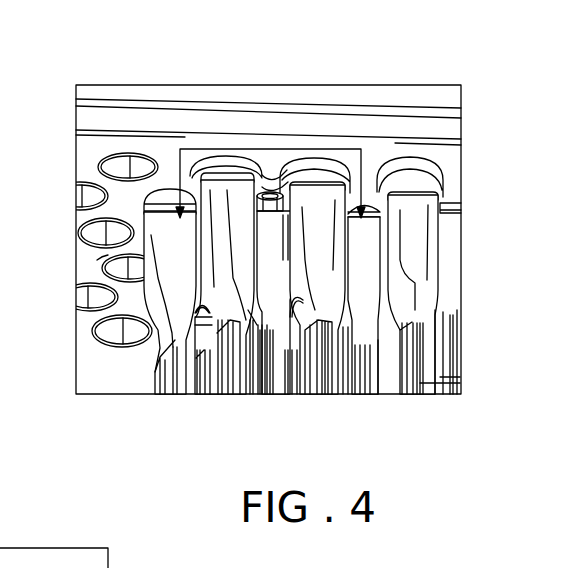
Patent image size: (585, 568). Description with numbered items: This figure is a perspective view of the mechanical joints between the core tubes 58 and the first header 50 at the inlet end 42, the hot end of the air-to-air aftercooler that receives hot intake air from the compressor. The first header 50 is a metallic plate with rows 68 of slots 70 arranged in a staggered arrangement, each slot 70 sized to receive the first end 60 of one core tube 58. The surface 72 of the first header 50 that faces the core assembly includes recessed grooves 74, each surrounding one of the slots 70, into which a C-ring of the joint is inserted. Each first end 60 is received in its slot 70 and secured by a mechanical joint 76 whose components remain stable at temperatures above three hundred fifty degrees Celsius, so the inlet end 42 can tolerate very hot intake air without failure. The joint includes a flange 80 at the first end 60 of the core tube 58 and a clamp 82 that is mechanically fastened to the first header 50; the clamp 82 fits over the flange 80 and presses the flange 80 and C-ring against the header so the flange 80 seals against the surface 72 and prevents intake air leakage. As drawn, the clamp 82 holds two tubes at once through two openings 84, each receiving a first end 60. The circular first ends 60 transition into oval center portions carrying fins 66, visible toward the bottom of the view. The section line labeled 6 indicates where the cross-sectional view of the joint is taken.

The inlet end 42 is at (497, 93).
The first header 50 is at (412, 112).
The core tubes 58 is at (427, 293).
The first end 60 is at (463, 205).
The fins 66 is at (452, 392).
The rows 68 is at (72, 164).
The slots 70 is at (148, 170).
The surface 72 is at (97, 260).
The recessed grooves 74 is at (153, 220).
The mechanical joint 76 is at (270, 216).
The flange 80 is at (420, 167).
The clamp 82 is at (240, 172).
The openings 84 is at (224, 283).
The section line 6- 6 is at (270, 199).